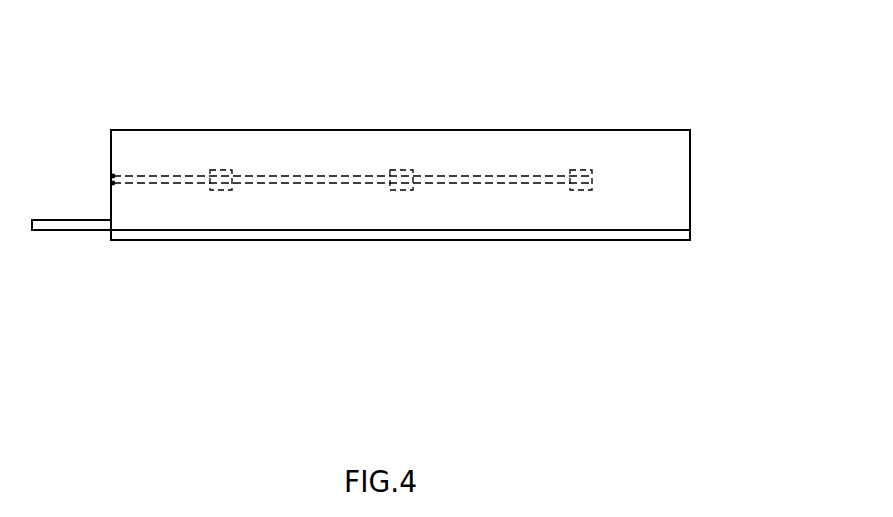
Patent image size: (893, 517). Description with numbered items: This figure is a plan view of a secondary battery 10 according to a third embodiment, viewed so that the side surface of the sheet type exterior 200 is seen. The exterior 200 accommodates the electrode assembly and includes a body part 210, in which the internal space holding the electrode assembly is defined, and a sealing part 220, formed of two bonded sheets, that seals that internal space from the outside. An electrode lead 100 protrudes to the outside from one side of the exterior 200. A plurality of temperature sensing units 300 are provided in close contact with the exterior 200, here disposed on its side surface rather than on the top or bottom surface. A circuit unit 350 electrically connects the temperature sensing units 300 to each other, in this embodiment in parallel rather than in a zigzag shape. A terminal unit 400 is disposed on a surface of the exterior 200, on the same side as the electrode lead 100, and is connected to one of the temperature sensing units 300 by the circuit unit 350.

The secondary battery 10 is at (517, 76).
The electrode lead 100 is at (70, 231).
The sheet type exterior 200 is at (770, 170).
The body part 210 is at (682, 176).
The sealing part 220 is at (682, 236).
The temperature sensing units 300 is at (399, 170).
The circuit unit 350 is at (303, 182).
The terminal unit 400 is at (113, 176).